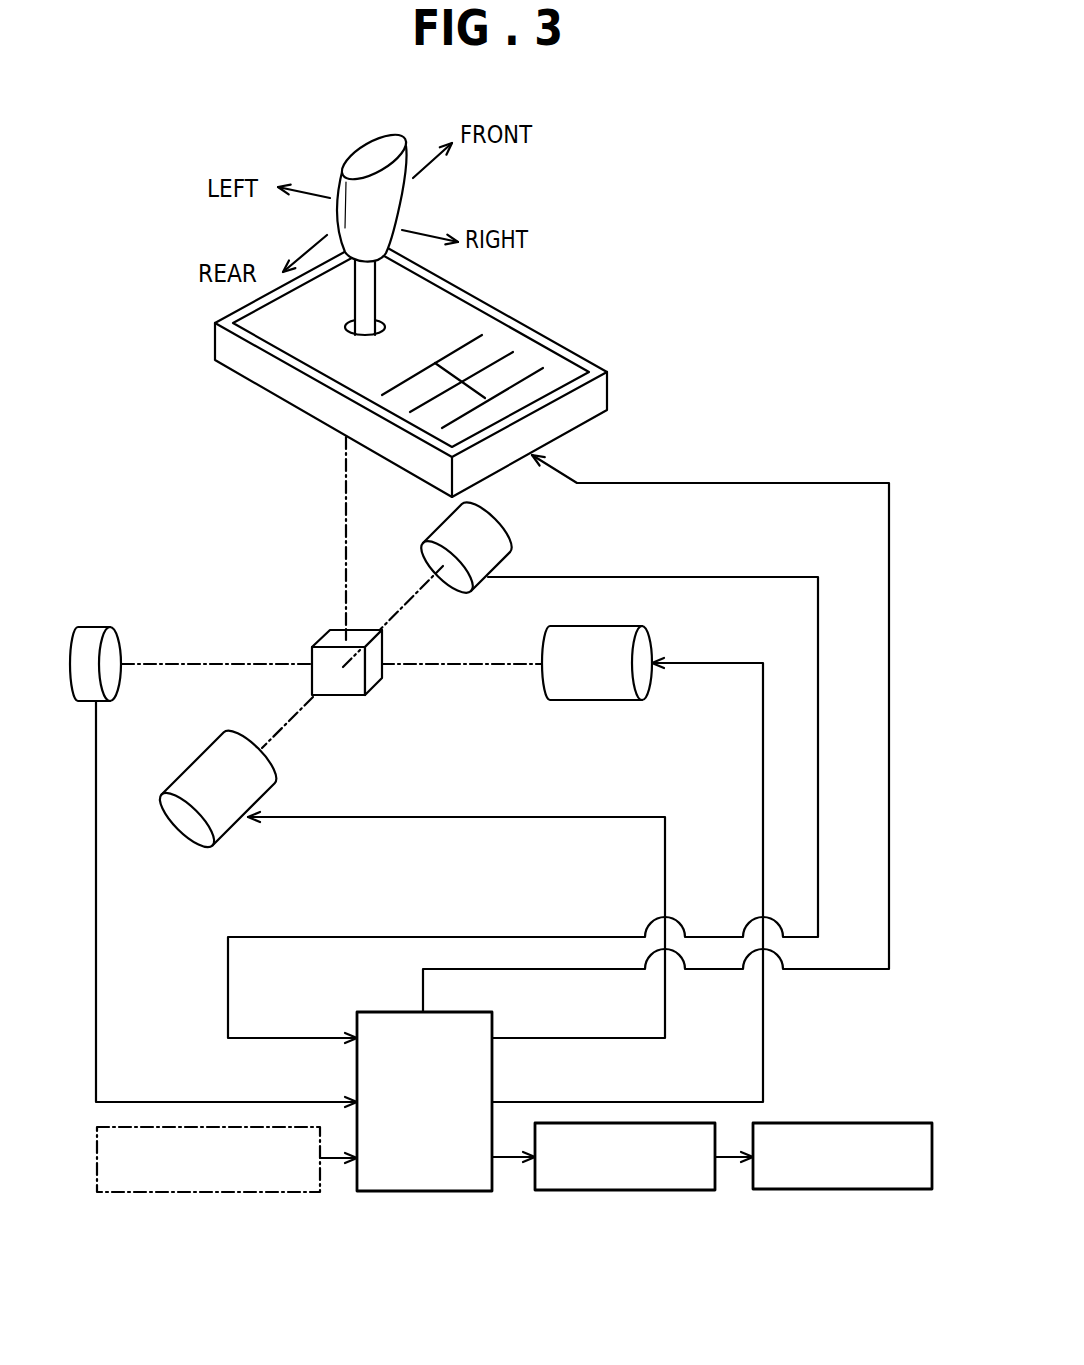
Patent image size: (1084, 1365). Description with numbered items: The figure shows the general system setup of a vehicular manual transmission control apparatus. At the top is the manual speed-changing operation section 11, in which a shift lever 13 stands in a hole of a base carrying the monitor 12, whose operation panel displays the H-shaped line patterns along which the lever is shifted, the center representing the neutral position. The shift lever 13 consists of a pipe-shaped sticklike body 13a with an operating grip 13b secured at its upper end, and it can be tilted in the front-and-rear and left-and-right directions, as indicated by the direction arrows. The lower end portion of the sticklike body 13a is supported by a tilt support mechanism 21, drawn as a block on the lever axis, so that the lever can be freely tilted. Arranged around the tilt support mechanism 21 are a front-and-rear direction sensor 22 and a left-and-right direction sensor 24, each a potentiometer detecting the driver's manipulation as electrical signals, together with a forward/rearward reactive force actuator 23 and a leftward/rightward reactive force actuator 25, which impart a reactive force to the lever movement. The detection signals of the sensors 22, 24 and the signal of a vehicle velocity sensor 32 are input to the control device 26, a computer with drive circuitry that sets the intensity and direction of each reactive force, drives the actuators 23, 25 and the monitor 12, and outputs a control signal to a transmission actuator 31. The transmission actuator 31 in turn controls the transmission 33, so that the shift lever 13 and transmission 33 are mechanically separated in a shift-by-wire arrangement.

The manual speed-changing operation section 11 is at (407, 282).
The monitor 12 is at (477, 358).
The shift lever 13 is at (378, 280).
The pipe-shaped sticklike body 13a is at (363, 303).
The operating grip 13b is at (387, 203).
The tilt support mechanism 21 is at (337, 635).
The front-and-rear direction sensor 22 is at (90, 637).
The forward/rearward reactive force actuator 23 is at (590, 683).
The left-and-right direction sensor 24 is at (483, 540).
The leftward/rightward reactive force actuator 25 is at (187, 828).
The control device 26 is at (423, 1192).
The transmission actuator 31 is at (625, 1190).
The vehicle velocity sensor 32 is at (203, 1192).
The transmission 33 is at (840, 1190).